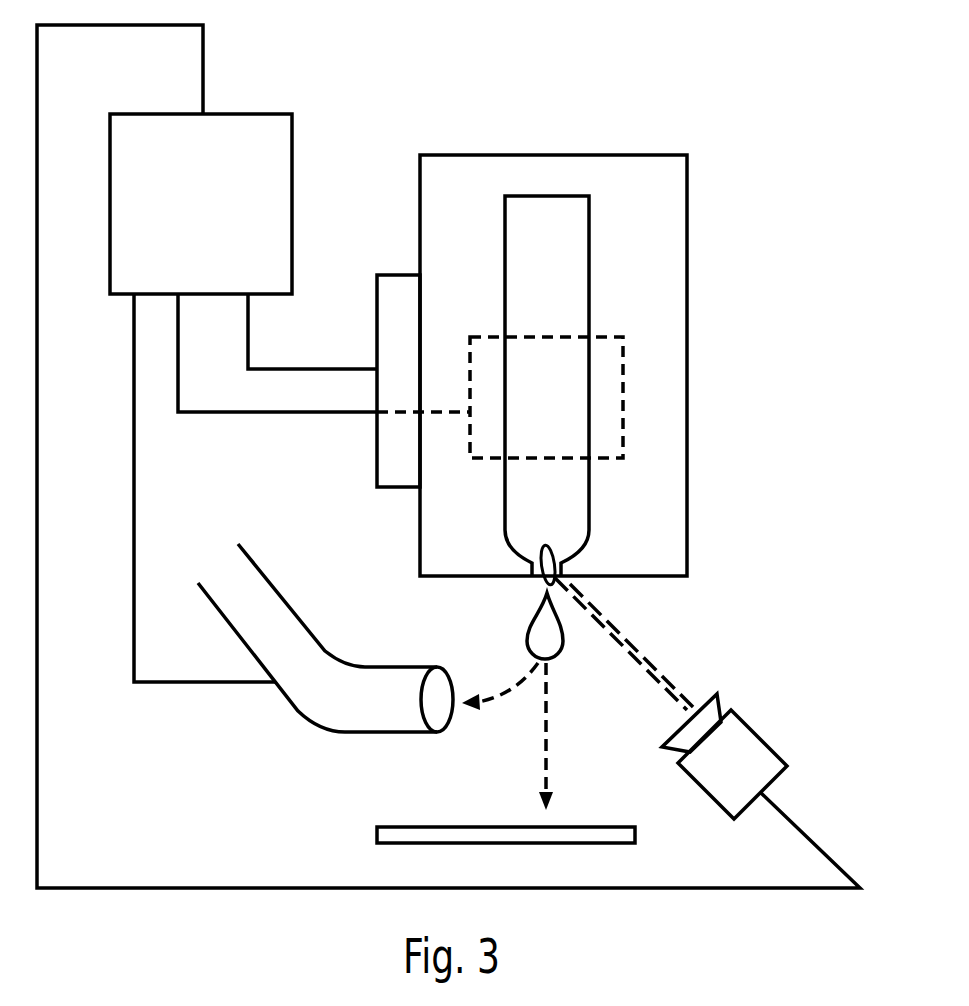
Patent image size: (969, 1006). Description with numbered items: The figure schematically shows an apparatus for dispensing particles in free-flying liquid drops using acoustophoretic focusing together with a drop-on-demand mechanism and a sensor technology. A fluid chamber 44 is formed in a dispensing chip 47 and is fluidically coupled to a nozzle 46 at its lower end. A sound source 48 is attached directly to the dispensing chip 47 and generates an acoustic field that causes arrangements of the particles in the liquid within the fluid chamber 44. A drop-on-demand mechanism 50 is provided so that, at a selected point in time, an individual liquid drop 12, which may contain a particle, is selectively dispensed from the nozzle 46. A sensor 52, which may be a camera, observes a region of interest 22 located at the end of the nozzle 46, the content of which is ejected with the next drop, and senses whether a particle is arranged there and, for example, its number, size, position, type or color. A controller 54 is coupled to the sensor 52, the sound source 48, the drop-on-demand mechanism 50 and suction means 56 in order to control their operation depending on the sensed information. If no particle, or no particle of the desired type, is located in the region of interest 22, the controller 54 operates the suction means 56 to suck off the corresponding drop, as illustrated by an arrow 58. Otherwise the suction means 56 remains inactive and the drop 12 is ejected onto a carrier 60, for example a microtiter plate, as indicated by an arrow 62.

The liquid drop 12 is at (563, 650).
The region of interest 22 is at (543, 548).
The fluid chamber 44 is at (590, 283).
The nozzle 46 is at (558, 565).
The dispensing chip 47 is at (556, 155).
The sound source 48 is at (400, 273).
The drop-on-demand mechanism 50 is at (623, 414).
The sensor 52 is at (762, 735).
The controller 54 is at (252, 113).
The suction means 56 is at (340, 735).
The arrow 58 is at (507, 688).
The carrier 60 is at (636, 832).
The arrow 62 is at (548, 778).